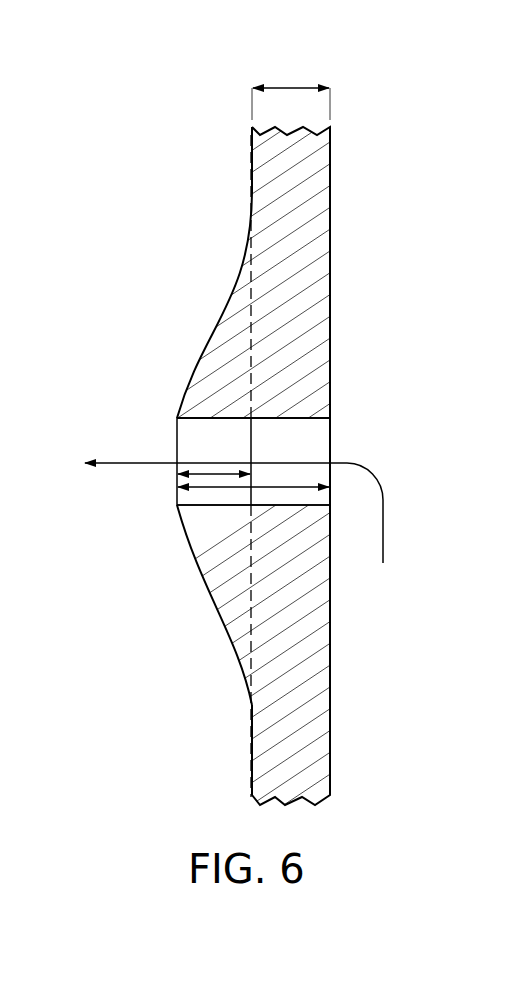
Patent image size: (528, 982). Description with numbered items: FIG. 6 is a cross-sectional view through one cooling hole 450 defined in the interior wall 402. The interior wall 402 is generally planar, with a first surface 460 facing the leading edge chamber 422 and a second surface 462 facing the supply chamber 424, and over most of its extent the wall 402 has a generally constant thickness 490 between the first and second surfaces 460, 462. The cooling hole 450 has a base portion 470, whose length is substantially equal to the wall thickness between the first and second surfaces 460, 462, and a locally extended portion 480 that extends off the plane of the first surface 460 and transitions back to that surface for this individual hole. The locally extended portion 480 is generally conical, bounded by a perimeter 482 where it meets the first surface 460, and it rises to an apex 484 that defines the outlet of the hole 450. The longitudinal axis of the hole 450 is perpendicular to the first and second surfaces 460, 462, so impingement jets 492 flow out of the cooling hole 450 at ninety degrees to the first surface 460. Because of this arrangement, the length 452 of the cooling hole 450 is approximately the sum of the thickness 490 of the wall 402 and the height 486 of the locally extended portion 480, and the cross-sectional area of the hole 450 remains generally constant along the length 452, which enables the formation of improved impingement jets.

The interior wall 402 is at (320, 283).
The leading edge chamber 422 is at (102, 359).
The supply chamber 424 is at (499, 359).
The cooling hole 450 is at (322, 447).
The length of the cooling hole 452 is at (263, 487).
The first surface 460 is at (251, 163).
The second surface 462 is at (331, 163).
The base portion 470 is at (320, 398).
The locally extended portion 480 is at (233, 304).
The perimeter 482 is at (248, 680).
The apex 484 is at (176, 497).
The height of the locally extended portion 486 is at (220, 473).
The thickness 490 is at (290, 88).
The impingement jets 492 is at (367, 463).